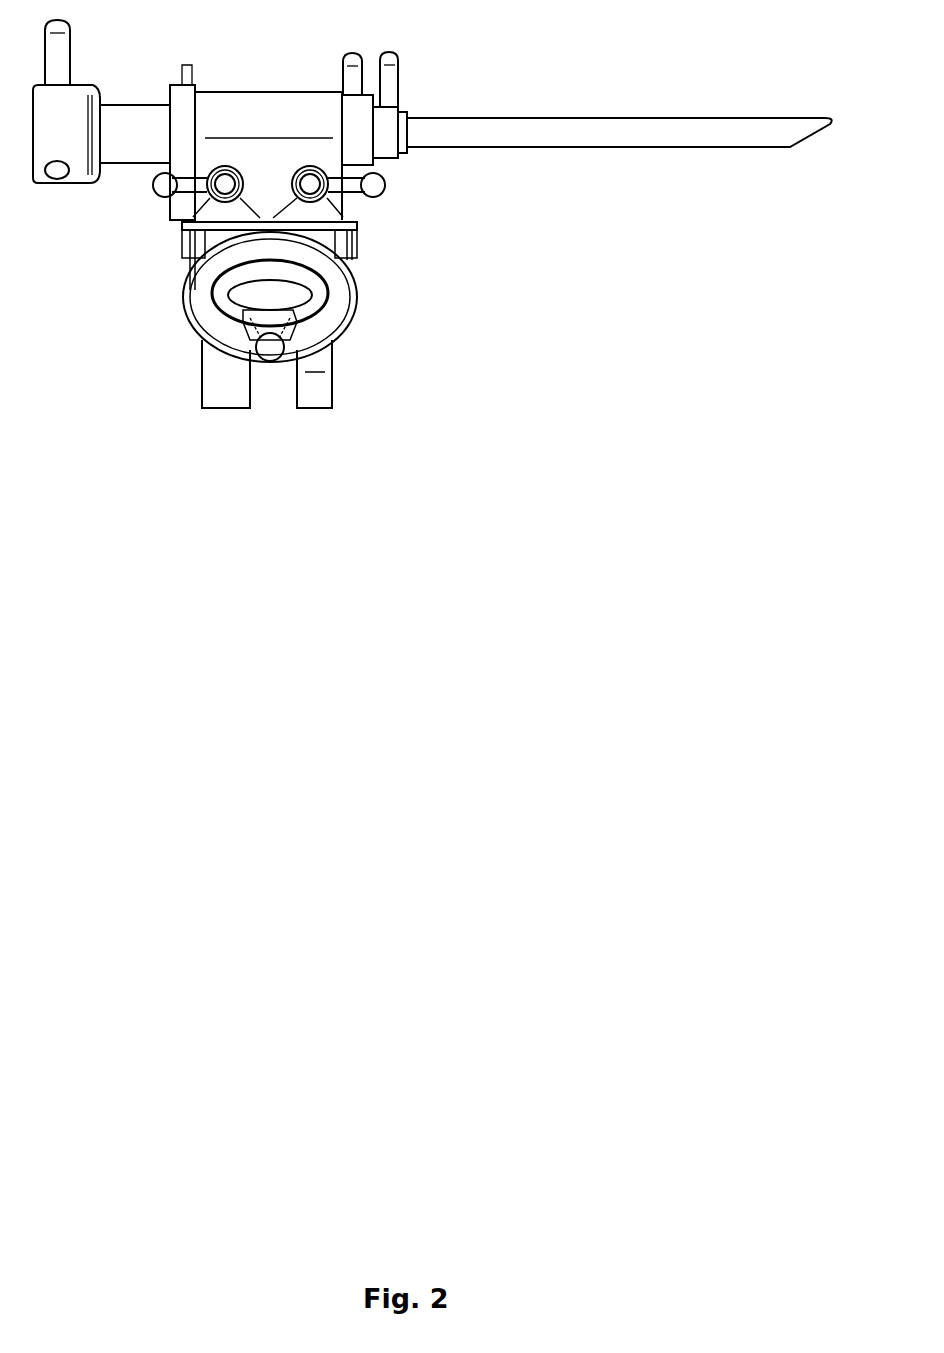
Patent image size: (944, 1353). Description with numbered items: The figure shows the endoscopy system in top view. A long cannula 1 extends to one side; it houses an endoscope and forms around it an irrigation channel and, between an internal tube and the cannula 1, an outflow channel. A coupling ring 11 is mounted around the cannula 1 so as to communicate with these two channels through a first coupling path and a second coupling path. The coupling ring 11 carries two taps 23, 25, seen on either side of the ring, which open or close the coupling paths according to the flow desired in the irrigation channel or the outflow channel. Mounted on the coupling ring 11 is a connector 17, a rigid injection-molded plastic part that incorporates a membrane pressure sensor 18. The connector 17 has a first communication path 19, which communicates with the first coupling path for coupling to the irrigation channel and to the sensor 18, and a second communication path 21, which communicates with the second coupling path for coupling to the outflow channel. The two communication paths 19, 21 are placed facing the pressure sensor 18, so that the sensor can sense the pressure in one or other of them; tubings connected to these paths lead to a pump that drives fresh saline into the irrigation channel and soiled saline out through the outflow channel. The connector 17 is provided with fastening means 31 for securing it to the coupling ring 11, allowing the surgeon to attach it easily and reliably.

The cannula 1 is at (650, 137).
The coupling ring 11 is at (272, 103).
The connector 17 is at (357, 298).
The pressure sensor 18 is at (185, 287).
The first communication path 19 is at (220, 404).
The second communication path 21 is at (315, 404).
The tap 23 is at (156, 196).
The tap 25 is at (386, 187).
The fastening means 31 is at (358, 222).